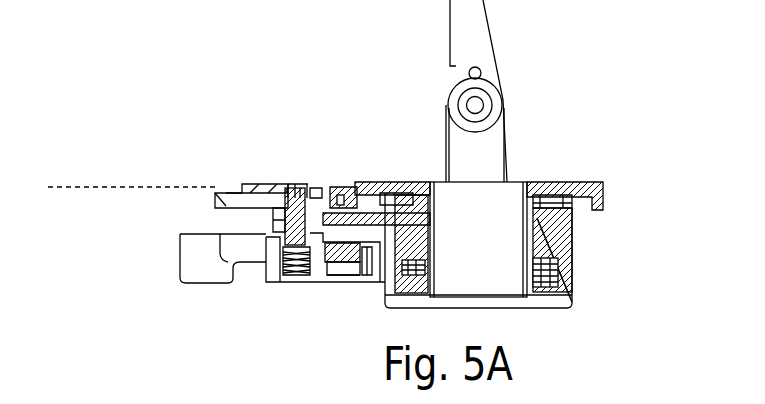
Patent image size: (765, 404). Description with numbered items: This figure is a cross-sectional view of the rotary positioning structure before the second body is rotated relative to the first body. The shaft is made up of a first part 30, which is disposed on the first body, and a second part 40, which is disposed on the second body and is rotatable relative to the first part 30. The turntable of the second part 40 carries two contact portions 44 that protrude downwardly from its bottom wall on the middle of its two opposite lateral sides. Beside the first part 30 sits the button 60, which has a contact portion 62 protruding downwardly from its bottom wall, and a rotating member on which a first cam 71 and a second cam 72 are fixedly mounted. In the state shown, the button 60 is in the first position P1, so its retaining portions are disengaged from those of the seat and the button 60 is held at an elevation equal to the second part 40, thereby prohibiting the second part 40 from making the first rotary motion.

The first part 30 is at (207, 285).
The second part 40 is at (507, 160).
The contact portions 44 is at (603, 190).
The button 60 is at (281, 185).
The contact portion 62 is at (340, 188).
The first cam 71 is at (362, 282).
The second cam 72 is at (318, 190).
The first position P1 is at (118, 187).